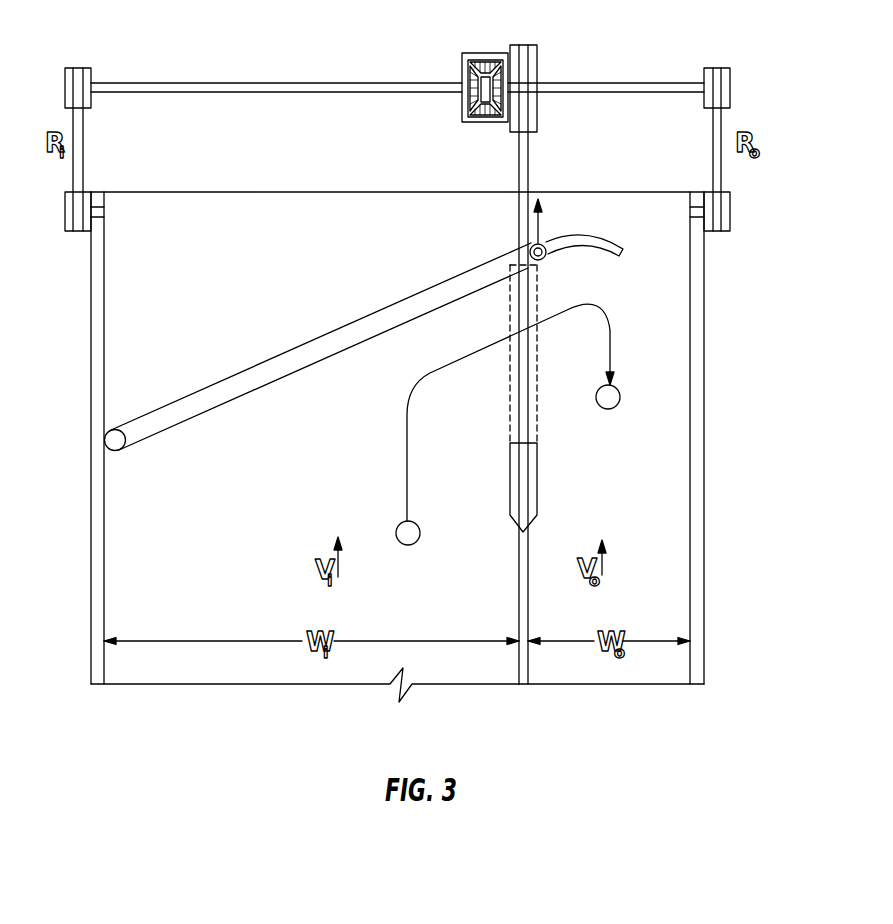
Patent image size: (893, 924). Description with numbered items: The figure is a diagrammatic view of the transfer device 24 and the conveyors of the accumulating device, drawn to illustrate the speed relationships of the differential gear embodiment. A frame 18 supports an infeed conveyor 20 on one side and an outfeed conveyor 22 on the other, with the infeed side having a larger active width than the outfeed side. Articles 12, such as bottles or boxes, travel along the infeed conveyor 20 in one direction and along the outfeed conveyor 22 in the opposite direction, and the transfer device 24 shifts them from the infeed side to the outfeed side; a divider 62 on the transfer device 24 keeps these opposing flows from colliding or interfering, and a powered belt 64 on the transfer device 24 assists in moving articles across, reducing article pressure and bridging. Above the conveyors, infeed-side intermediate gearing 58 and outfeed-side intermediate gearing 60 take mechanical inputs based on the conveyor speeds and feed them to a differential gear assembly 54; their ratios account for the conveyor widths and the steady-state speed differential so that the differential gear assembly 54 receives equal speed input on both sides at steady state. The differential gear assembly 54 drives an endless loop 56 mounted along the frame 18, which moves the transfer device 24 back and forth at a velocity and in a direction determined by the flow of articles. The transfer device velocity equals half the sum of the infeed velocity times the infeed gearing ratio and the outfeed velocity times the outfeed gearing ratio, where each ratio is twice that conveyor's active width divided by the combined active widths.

The articles 12 is at (620, 391).
The frame 18 is at (91, 502).
The infeed conveyor 20 is at (203, 676).
The outfeed conveyor 22 is at (652, 672).
The transfer device 24 is at (364, 325).
The differential gear assembly 54 is at (478, 53).
The endless loop 56 is at (528, 172).
The intermediate gearing (infeed side) 58 is at (92, 78).
The intermediate gearing (outfeed side) 60 is at (730, 88).
The divider 62 is at (537, 489).
The powered belt 64 is at (384, 302).